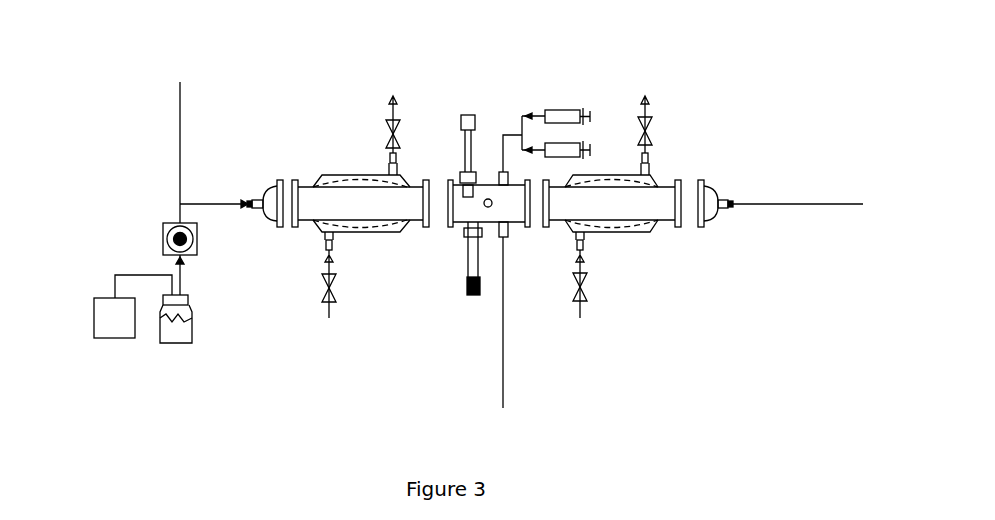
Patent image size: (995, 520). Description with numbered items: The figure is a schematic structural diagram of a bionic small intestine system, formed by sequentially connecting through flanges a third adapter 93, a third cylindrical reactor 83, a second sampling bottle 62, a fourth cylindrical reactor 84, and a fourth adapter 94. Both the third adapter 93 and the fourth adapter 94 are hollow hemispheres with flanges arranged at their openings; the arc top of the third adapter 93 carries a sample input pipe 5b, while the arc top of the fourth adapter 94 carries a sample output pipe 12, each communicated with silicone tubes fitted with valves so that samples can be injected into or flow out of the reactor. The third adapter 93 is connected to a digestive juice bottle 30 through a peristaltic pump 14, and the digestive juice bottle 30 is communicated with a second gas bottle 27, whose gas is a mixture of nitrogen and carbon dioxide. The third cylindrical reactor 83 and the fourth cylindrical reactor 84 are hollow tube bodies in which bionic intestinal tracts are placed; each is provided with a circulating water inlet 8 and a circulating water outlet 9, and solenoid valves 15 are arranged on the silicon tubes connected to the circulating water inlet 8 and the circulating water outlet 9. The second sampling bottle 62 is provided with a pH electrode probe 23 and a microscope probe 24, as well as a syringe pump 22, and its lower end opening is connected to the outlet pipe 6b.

The sample input pipe 5b is at (178, 148).
The peristaltic pump 14 is at (165, 240).
The second gas bottle 27 is at (105, 330).
The digestive juice bottle 30 is at (190, 328).
The third adapter 93 is at (272, 188).
The third cylindrical reactor 83 is at (343, 195).
The fourth cylindrical reactor 84 is at (612, 232).
The circulating water outlet 9 is at (398, 165).
The circulating water inlet 8 is at (325, 243).
The solenoid valve 15 is at (385, 128).
The second sampling bottle 62 is at (515, 220).
The pH electrode probe 23 is at (465, 118).
The microscope probe 24 is at (468, 286).
The syringe pump 22 is at (582, 93).
The outlet pipe 6b is at (505, 370).
The fourth adapter 94 is at (710, 216).
The sample output pipe 12 is at (800, 203).